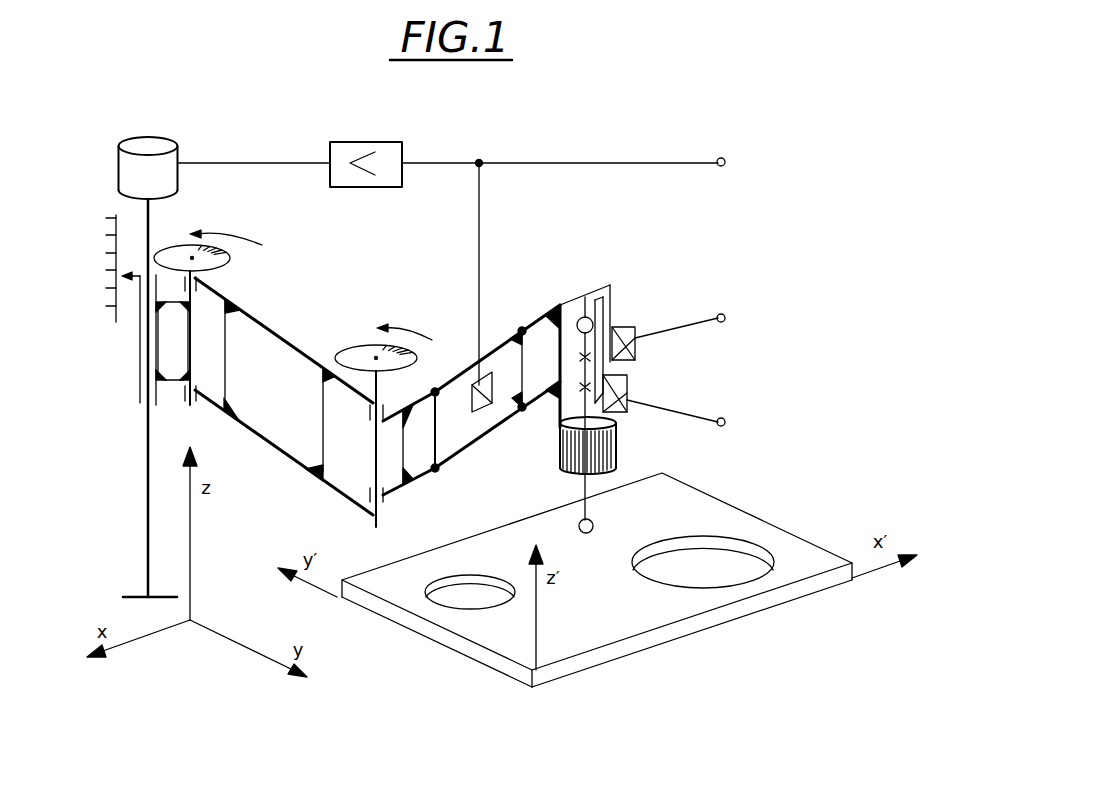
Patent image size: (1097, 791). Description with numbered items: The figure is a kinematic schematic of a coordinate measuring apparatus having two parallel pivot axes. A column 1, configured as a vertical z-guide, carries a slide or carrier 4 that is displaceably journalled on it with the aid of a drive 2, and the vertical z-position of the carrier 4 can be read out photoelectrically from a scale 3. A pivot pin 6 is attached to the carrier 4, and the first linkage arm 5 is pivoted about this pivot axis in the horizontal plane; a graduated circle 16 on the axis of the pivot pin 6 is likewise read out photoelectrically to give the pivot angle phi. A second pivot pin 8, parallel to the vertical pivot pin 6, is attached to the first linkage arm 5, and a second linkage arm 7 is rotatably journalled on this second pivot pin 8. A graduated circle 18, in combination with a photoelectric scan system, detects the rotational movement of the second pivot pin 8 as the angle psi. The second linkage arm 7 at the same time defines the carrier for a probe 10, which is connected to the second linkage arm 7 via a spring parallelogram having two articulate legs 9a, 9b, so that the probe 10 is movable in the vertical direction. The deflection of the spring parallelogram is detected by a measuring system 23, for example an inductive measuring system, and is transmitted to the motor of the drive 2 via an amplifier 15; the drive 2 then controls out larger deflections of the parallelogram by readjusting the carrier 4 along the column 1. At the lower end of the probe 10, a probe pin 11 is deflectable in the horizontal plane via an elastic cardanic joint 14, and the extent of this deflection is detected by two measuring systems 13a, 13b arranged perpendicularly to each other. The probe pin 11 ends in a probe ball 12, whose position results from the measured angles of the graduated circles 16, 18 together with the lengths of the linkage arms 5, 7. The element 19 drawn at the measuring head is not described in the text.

The column 1 is at (147, 517).
The drive 2 is at (165, 146).
The scale 3 is at (120, 253).
The carrier 4 is at (168, 383).
The first linkage arm 5 is at (272, 330).
The pivot pin 6 is at (196, 312).
The second linkage arm 7 is at (411, 483).
The second pivot pin 8 is at (385, 388).
The articulate leg of spring parallelogram 9a is at (507, 343).
The articulate leg of spring parallelogram 9b is at (485, 437).
The probe 10 is at (545, 312).
The probe pin 11 is at (597, 412).
The probe ball 12 is at (594, 526).
The measuring system 13a is at (634, 330).
The measuring system 13b is at (629, 394).
The elastic cardanic joint 14 is at (572, 298).
The amplifier 15 is at (395, 152).
The graduated circle 16 is at (230, 255).
The graduated circle 18 is at (348, 345).
The measuring head 19 is at (620, 452).
The measuring system 23 is at (478, 372).